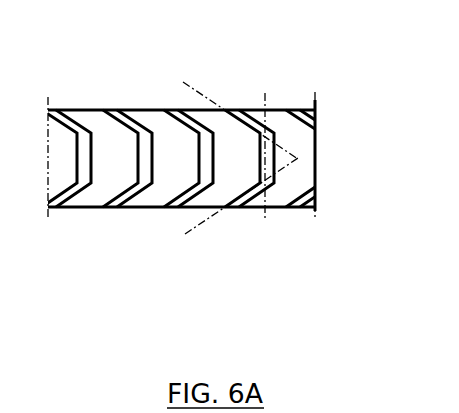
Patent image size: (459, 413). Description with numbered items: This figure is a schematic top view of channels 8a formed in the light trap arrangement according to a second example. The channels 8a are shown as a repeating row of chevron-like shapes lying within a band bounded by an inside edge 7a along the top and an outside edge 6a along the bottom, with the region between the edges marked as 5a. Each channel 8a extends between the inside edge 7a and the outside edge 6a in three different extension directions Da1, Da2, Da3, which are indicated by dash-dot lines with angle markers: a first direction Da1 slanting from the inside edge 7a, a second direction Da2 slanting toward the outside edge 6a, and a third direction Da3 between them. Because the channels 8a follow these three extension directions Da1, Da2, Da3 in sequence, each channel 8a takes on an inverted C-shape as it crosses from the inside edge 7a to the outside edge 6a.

The belt layer 5a is at (188, 153).
The inside edge 7a is at (72, 110).
The outside edge 6a is at (80, 207).
The channels 8a is at (132, 188).
The first extension direction Da1 is at (218, 104).
The second extension direction Da2 is at (265, 218).
The third extension direction Da3 is at (200, 223).